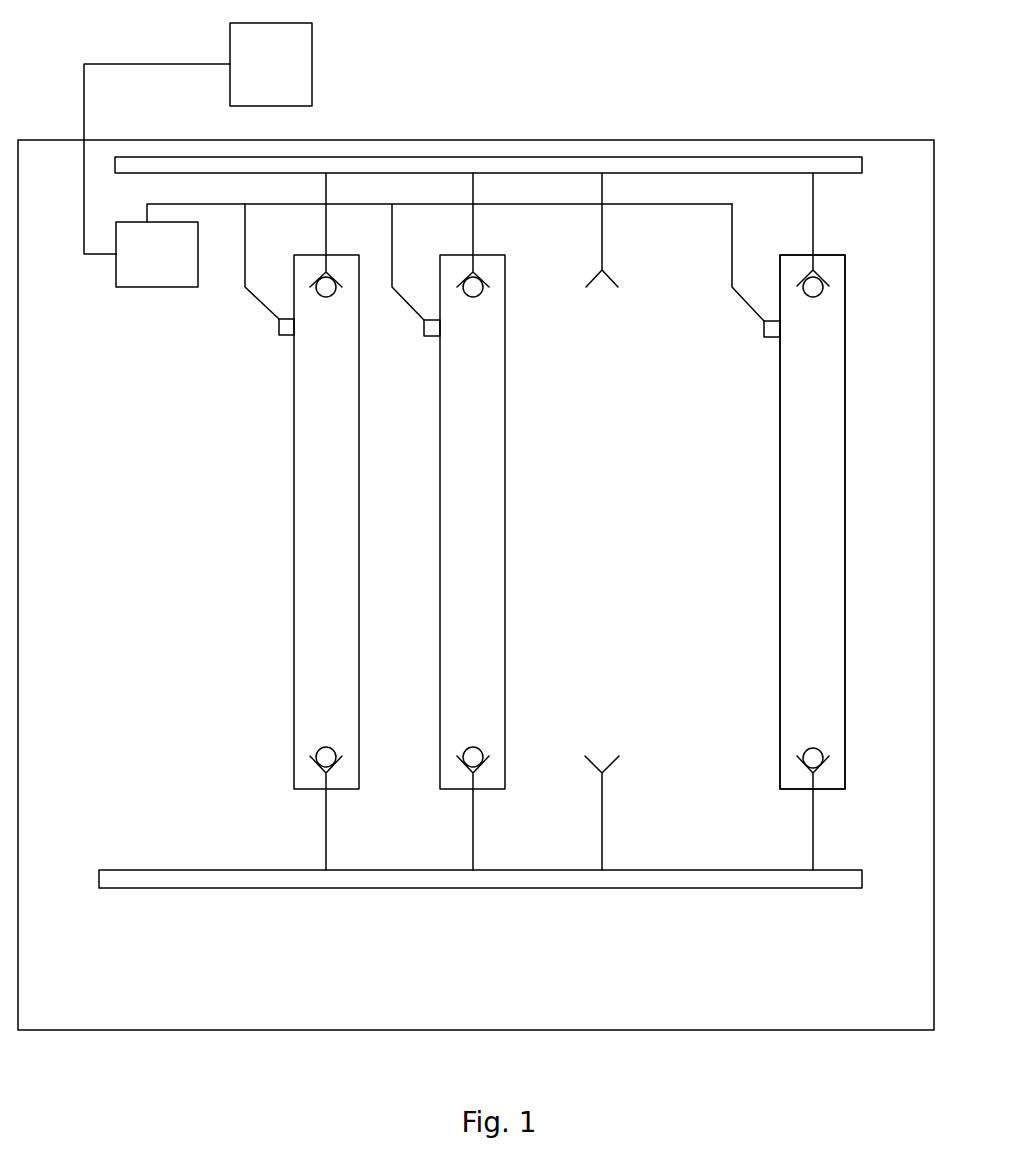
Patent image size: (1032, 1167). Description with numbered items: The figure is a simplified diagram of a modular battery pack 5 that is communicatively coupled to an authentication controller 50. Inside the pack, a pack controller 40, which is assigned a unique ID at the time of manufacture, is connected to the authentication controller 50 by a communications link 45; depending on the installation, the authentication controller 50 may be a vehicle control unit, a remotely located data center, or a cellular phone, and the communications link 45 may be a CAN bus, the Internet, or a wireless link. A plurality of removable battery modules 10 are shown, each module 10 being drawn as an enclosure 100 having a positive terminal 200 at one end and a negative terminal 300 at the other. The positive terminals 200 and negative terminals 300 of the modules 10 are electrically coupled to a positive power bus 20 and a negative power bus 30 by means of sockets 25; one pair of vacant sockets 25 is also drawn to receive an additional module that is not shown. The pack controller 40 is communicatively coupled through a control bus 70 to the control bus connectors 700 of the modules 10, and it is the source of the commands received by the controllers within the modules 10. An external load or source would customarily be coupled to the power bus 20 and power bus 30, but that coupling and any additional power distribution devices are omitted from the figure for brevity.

The modular battery pack 5 is at (835, 140).
The removable battery module 10 is at (293, 602).
The positive power bus 20 is at (685, 157).
The socket 25 is at (604, 286).
The negative power bus 30 is at (253, 889).
The pack controller 40 is at (156, 265).
The communications link 45 is at (197, 64).
The authentication controller 50 is at (312, 70).
The control bus 70 is at (513, 204).
The enclosure 100 is at (837, 508).
The positive terminal 200 is at (815, 297).
The negative terminal 300 is at (818, 752).
The control bus connector 700 is at (287, 337).